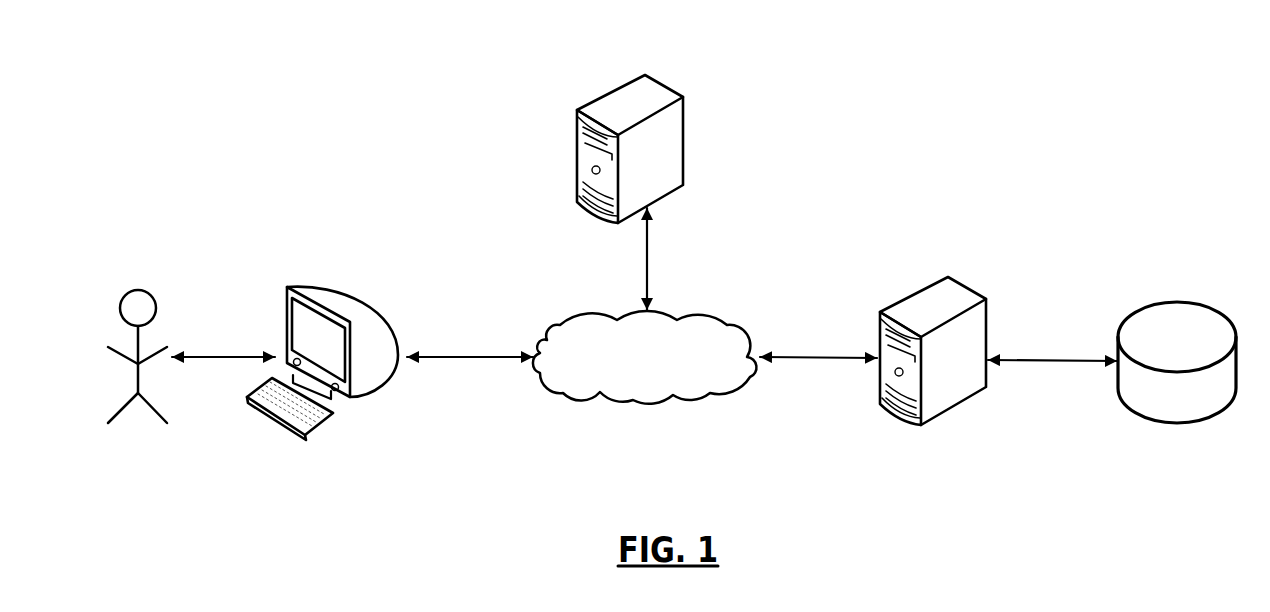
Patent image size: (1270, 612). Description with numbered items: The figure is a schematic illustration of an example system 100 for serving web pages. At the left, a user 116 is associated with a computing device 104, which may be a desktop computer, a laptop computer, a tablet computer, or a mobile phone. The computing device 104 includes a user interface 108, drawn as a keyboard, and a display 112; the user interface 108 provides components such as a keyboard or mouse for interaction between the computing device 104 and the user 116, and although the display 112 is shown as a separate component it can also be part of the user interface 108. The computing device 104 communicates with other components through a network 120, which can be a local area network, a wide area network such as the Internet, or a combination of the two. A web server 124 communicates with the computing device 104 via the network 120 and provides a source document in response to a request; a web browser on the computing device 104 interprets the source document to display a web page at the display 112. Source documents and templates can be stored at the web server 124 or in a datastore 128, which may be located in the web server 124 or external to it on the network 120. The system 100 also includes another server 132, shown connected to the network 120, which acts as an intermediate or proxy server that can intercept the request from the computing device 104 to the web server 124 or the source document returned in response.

The system 100 is at (164, 61).
The user 116 is at (98, 268).
The computing device 104 is at (362, 345).
The display 112 is at (337, 358).
The user interface 108 is at (273, 418).
The network 120 is at (647, 404).
The server 132 is at (661, 83).
The web server 124 is at (966, 284).
The datastore 128 is at (1177, 303).